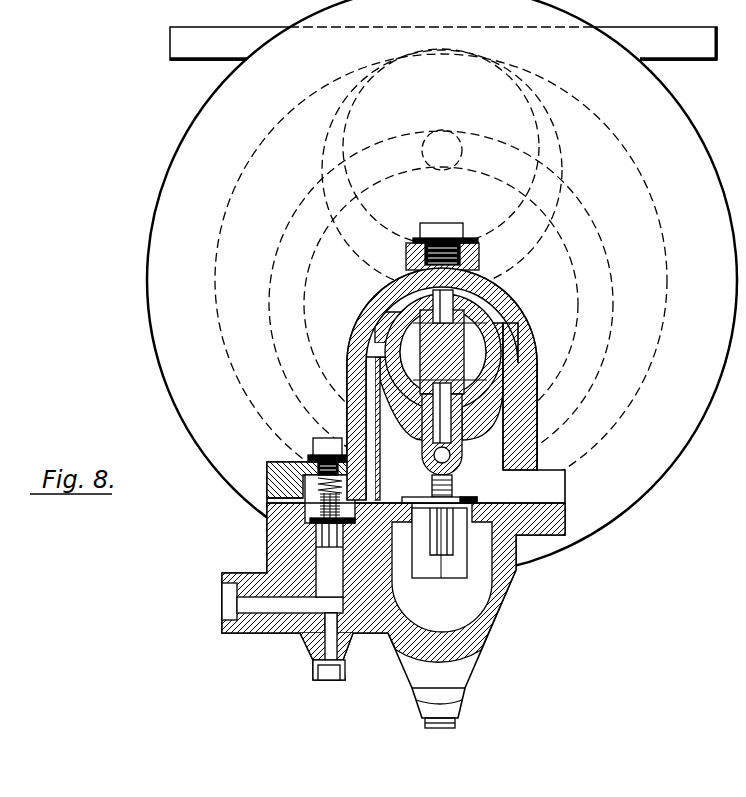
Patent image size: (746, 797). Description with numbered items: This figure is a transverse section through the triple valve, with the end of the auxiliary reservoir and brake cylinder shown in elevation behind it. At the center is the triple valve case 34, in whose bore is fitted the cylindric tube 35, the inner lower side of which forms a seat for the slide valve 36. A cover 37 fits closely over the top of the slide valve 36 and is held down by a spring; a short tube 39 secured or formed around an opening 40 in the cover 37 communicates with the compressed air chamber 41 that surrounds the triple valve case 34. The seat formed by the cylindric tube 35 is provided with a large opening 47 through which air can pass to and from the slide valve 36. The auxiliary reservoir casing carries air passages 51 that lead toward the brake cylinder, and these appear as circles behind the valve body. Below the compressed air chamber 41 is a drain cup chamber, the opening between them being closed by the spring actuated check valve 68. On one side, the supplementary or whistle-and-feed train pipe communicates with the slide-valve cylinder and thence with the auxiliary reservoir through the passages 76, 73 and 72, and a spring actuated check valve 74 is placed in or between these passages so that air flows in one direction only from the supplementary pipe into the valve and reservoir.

The triple valve case 34 is at (540, 381).
The cylindric tube 35 is at (424, 416).
The slide valve 36 is at (506, 352).
The cover 37 is at (502, 318).
The short tube 39 is at (441, 294).
The opening 40 is at (378, 331).
The compressed air chamber 41 is at (378, 310).
The large opening 47 is at (423, 430).
The air passages 51 is at (441, 280).
The check valve 68 is at (432, 578).
The passage 72 is at (362, 403).
The passage 73 is at (328, 563).
The spring check valve 74 is at (318, 509).
The passage 76 is at (230, 600).